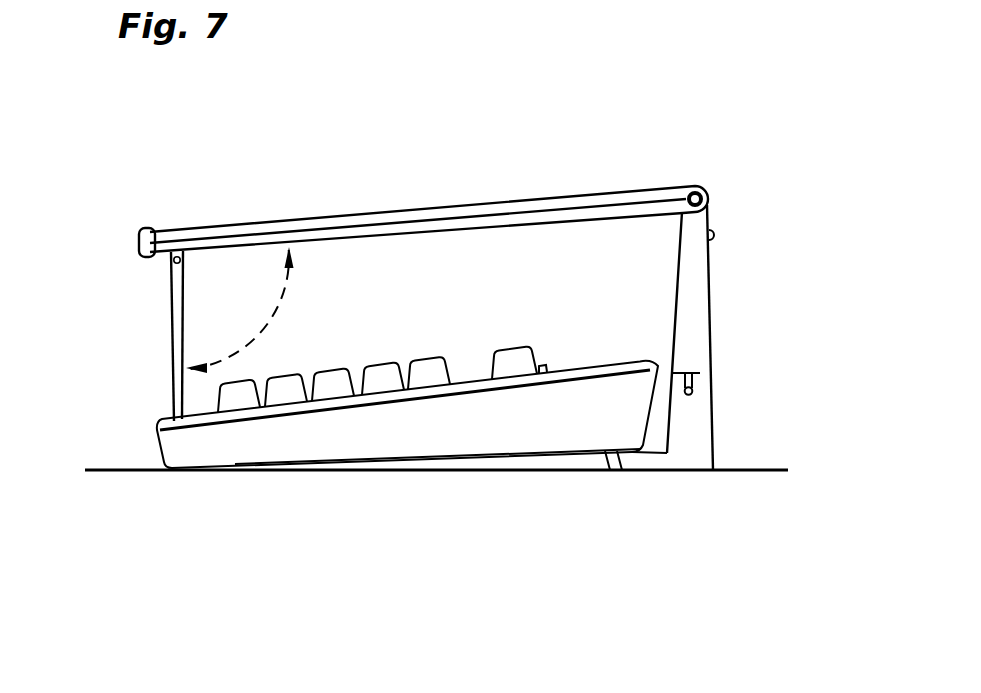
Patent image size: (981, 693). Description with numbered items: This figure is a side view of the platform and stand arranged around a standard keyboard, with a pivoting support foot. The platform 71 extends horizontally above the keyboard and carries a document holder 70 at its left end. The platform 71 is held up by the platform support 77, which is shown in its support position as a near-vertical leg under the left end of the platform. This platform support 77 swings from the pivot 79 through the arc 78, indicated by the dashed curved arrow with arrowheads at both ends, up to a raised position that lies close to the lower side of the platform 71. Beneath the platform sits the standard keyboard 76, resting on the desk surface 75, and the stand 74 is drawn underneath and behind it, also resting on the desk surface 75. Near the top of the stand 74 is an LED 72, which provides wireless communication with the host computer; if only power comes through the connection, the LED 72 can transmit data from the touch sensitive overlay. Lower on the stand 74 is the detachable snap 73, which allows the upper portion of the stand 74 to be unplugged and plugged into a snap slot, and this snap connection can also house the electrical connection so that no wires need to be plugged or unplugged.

The document holder 70 is at (423, 273).
The platform 71 is at (428, 209).
The LED 72 is at (715, 235).
The detachable snap 73 is at (700, 373).
The stand 74 is at (698, 315).
The desk surface 75 is at (753, 470).
The standard keyboard 76 is at (442, 425).
The platform support 77 is at (173, 382).
The arc 78 is at (257, 330).
The pivot 79 is at (138, 243).